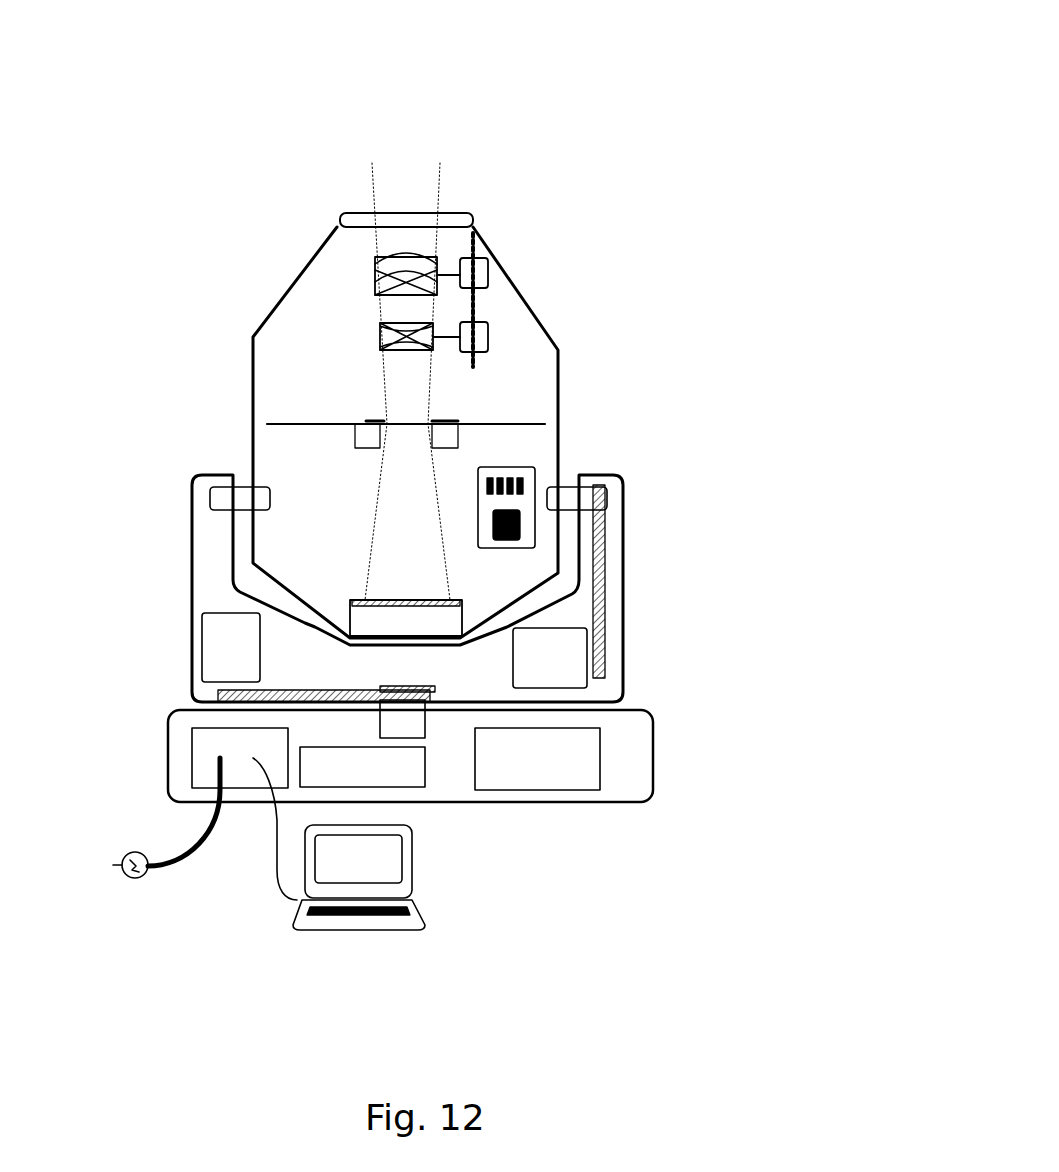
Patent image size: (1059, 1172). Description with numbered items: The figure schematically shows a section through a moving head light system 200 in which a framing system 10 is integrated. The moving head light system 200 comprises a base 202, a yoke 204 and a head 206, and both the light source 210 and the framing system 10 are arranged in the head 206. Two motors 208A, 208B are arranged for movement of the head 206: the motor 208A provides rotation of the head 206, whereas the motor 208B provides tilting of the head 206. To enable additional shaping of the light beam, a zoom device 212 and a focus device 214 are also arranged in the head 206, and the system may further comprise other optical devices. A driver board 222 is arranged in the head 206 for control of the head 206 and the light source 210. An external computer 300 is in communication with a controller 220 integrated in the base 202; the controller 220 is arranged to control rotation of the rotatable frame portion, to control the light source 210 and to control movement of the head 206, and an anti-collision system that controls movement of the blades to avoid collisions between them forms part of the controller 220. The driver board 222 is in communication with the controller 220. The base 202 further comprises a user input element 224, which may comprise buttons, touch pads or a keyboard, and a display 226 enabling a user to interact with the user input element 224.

The moving head light system 200 is at (675, 178).
The head 206 is at (300, 330).
The focus device 214 is at (435, 258).
The zoom device 212 is at (433, 337).
The framing system 10 is at (447, 417).
The driver board 222 is at (520, 477).
The yoke 204 is at (207, 557).
The motor 208A is at (228, 653).
The motor 208B is at (555, 662).
The light source 210 is at (436, 621).
The base 202 is at (177, 763).
The controller 220 is at (243, 770).
The user input element 224 is at (392, 763).
The display 226 is at (572, 763).
The external computer 300 is at (392, 865).